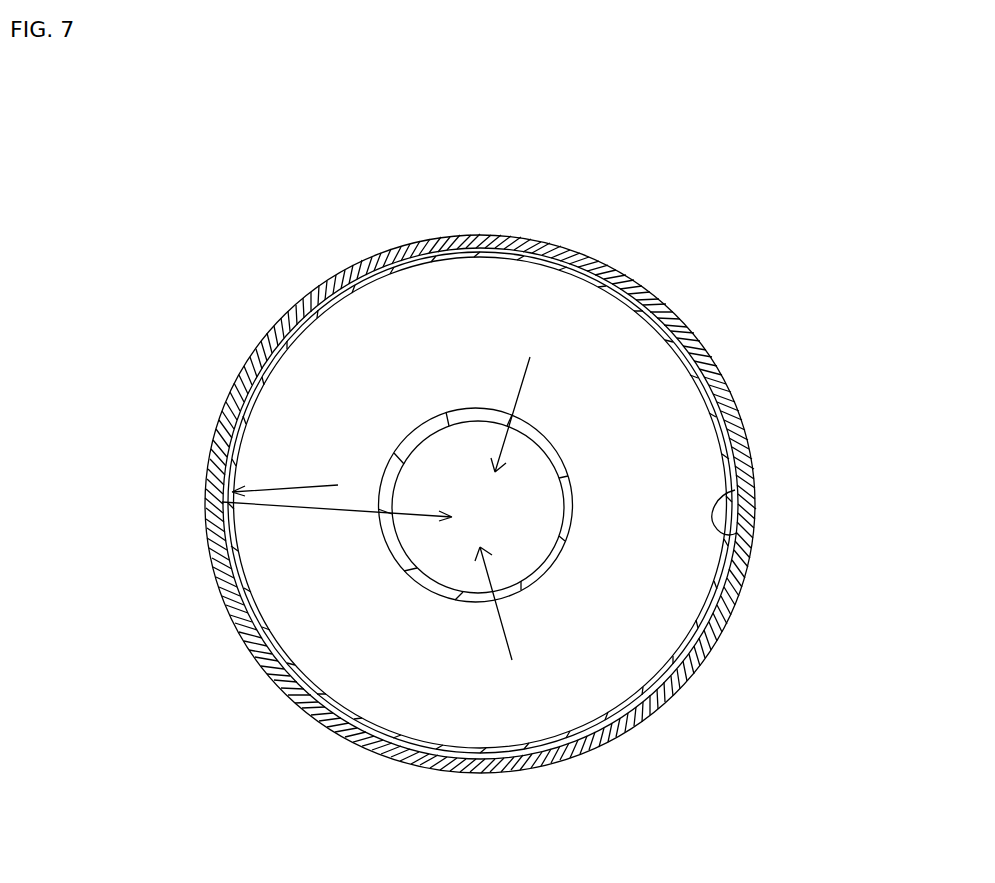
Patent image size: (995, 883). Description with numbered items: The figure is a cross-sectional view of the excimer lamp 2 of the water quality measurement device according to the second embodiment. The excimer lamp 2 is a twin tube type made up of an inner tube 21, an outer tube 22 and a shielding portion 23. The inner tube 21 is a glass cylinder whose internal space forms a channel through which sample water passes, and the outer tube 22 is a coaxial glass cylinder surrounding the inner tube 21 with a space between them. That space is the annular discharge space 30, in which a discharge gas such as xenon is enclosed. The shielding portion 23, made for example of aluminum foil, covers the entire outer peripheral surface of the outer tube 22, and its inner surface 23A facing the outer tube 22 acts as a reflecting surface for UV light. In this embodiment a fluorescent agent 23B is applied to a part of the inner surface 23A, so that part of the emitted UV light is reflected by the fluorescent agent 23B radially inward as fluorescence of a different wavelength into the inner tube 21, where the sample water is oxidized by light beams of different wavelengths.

The excimer lamp 2 is at (654, 251).
The inner tube 21 is at (415, 578).
The outer tube 22 is at (700, 378).
The shielding portion 23 is at (688, 327).
The inner surface 23A is at (750, 518).
The fluorescent agent 23B is at (207, 534).
The discharge space 30 is at (353, 368).